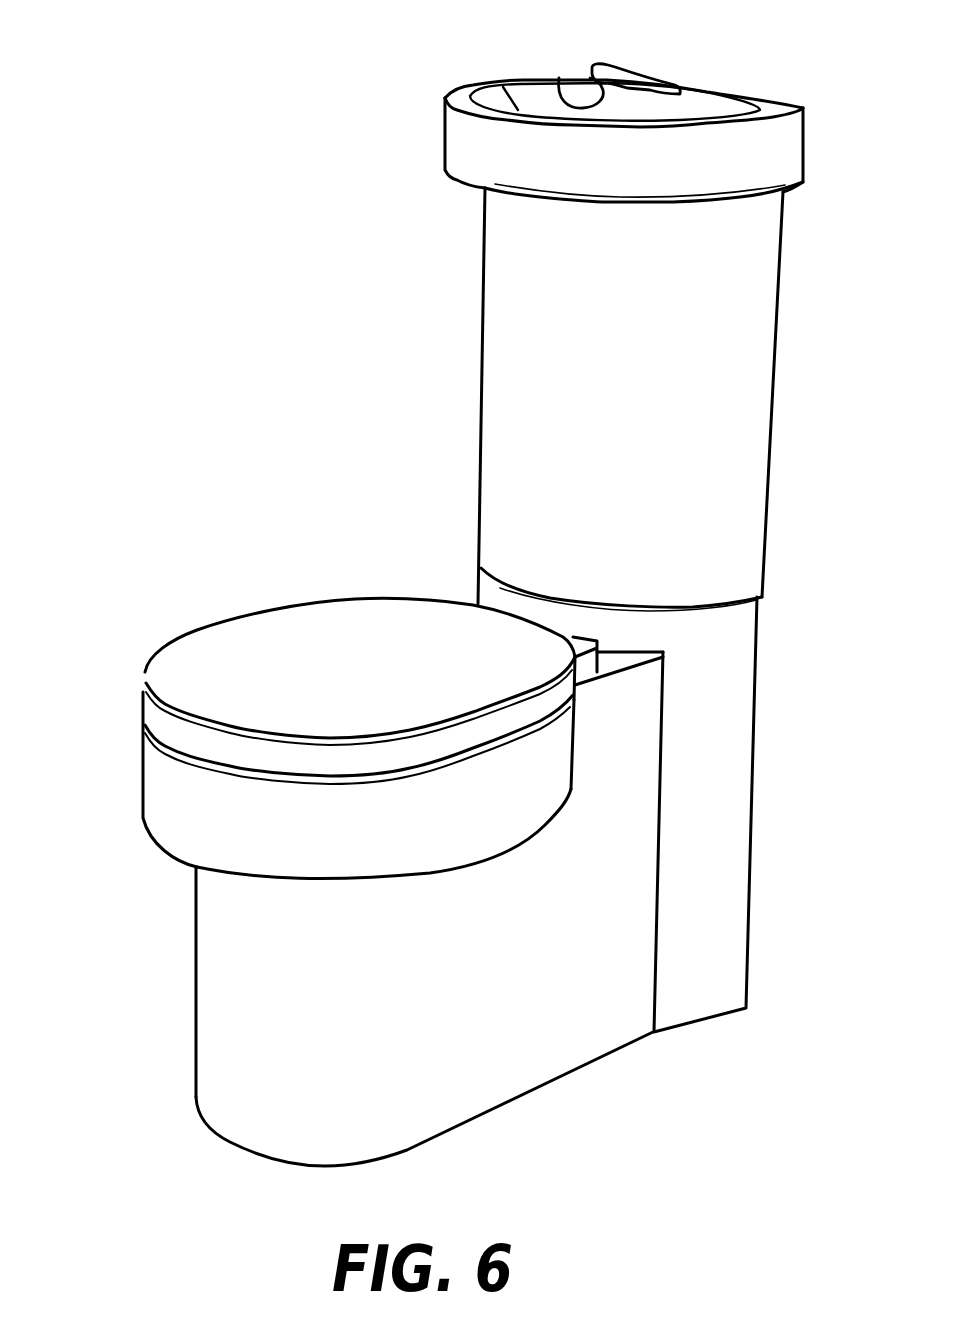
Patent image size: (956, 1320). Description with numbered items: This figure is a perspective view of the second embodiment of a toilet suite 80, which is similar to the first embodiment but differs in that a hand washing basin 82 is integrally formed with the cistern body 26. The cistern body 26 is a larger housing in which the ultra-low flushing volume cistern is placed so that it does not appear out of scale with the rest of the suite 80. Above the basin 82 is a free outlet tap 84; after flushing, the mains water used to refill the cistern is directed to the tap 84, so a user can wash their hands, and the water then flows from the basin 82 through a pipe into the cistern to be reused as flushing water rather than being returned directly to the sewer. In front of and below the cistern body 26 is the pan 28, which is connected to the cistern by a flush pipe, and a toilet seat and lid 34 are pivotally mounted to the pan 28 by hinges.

The suite 80 is at (279, 295).
The hand washing basin 82 is at (490, 95).
The free outlet tap 84 is at (559, 78).
The cistern body 26 is at (560, 387).
The lid 34 is at (273, 633).
The pan 28 is at (290, 940).